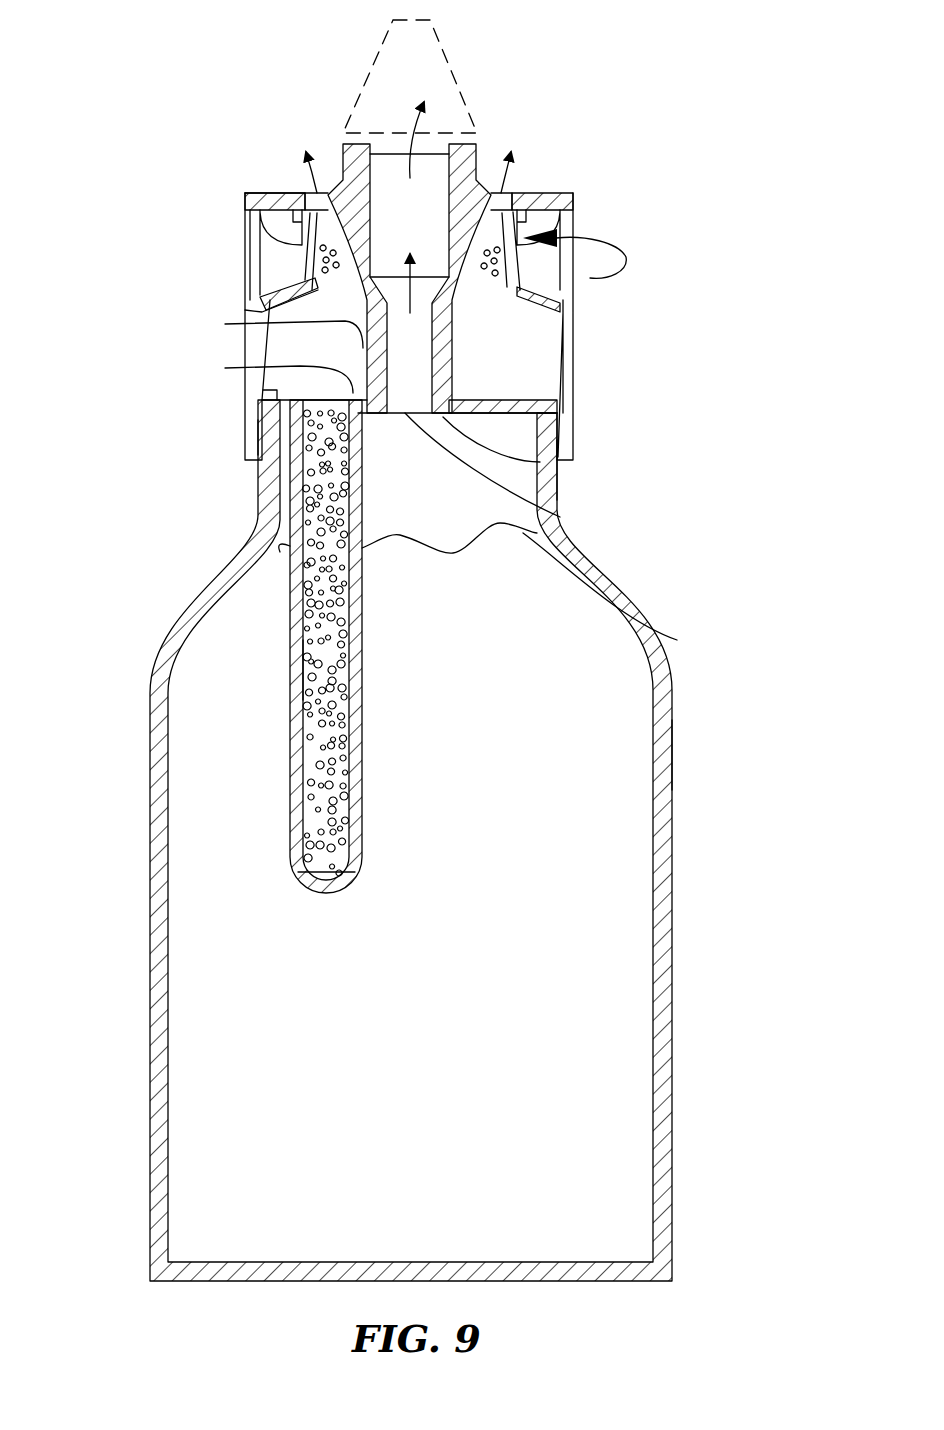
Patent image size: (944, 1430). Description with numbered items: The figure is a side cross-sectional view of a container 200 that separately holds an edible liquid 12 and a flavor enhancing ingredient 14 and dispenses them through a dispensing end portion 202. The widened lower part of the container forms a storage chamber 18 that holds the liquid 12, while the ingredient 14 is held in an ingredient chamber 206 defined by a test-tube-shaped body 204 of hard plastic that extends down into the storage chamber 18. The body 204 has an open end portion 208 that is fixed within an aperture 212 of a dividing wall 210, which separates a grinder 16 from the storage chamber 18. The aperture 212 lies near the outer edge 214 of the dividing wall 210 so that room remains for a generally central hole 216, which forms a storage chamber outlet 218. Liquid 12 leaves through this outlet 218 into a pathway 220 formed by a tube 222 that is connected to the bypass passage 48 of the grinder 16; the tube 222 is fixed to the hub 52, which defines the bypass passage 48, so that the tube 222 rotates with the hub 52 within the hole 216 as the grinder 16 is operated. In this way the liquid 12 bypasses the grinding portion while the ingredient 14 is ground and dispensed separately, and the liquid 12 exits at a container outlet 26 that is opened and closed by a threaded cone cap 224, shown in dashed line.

The container 200 is at (120, 439).
The dispensing end portion 202 is at (612, 78).
The edible liquid 12 is at (645, 630).
The flavor enhancing ingredient 14 is at (292, 607).
The grinder 16 is at (258, 217).
The storage chamber 18 is at (662, 748).
The container outlet 26 is at (374, 150).
The bypass passage 48 is at (444, 172).
The inner portion or hub 52 is at (340, 145).
The body 204 is at (292, 782).
The ingredient chamber 206 is at (303, 675).
The open end portion 208 is at (297, 445).
The dividing wall 210 is at (507, 400).
The aperture 212 is at (240, 368).
The outer edge 214 is at (268, 392).
The central hole 216 is at (553, 466).
The storage chamber outlet 218 is at (560, 517).
The pathway 220 is at (423, 343).
The tube 222 is at (240, 324).
The threaded cone cap 224 is at (447, 78).